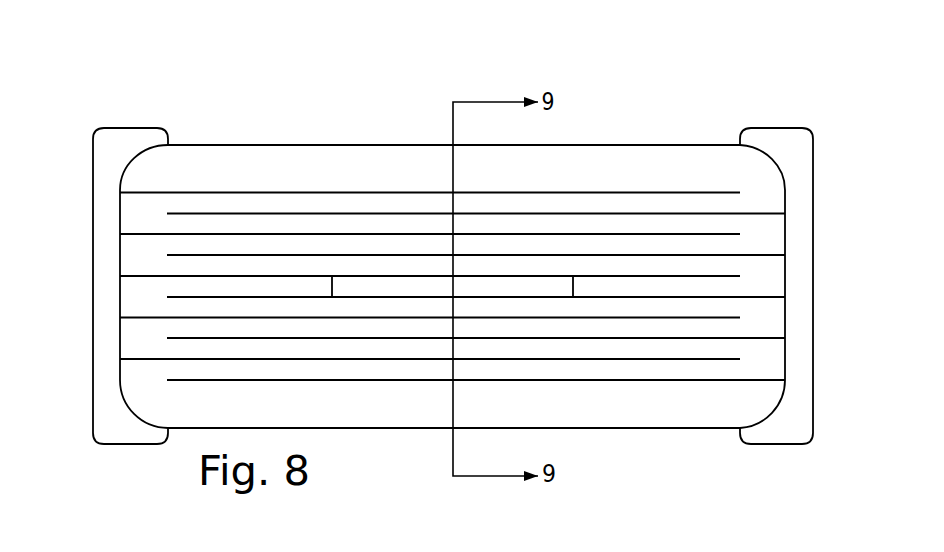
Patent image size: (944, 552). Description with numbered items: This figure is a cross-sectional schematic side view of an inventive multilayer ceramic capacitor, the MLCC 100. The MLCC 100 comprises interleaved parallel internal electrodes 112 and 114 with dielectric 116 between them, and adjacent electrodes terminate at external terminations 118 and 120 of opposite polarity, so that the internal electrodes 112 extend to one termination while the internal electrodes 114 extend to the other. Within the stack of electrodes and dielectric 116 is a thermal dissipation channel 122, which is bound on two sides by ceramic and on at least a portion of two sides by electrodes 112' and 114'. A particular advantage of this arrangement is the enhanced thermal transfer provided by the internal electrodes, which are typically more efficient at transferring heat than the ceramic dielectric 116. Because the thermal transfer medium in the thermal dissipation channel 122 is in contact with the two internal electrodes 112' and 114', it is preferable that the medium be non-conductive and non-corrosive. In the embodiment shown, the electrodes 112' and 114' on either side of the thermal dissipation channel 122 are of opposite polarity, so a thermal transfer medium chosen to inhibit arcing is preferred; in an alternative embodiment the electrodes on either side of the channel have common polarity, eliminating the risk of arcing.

The MLCC 100 is at (736, 113).
The internal electrode 112 is at (430, 209).
The electrode 112' is at (430, 168).
The internal electrode 114 is at (476, 224).
The electrode 114' is at (476, 398).
The dielectric 116 is at (140, 217).
The external termination 118 is at (120, 432).
The external termination 120 is at (785, 425).
The thermal dissipation channel 122 is at (417, 287).